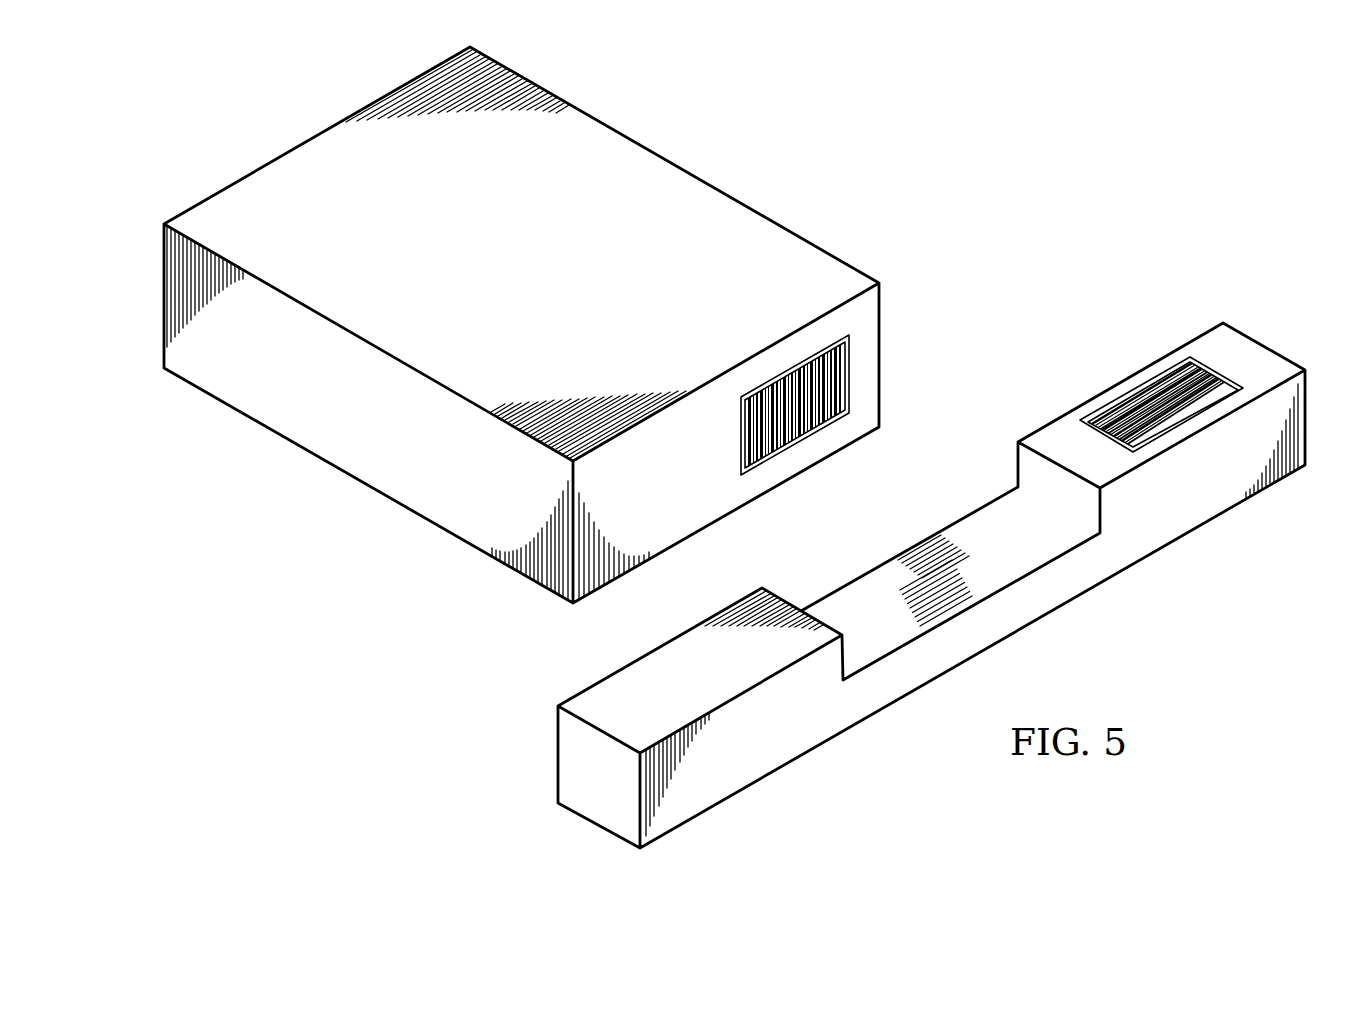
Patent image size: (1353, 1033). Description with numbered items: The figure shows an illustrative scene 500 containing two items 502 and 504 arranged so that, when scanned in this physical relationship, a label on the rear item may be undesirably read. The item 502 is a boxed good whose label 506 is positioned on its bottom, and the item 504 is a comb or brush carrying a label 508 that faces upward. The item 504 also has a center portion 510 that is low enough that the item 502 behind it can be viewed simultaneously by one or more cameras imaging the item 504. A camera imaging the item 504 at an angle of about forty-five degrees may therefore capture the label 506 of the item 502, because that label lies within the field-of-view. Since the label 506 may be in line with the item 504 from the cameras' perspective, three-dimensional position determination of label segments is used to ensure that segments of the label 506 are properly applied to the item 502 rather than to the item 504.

The scene 500 is at (734, 447).
The item 502 is at (560, 325).
The item 504 is at (931, 585).
The label 506 is at (851, 373).
The label 508 is at (1133, 387).
The center portion 510 is at (911, 520).